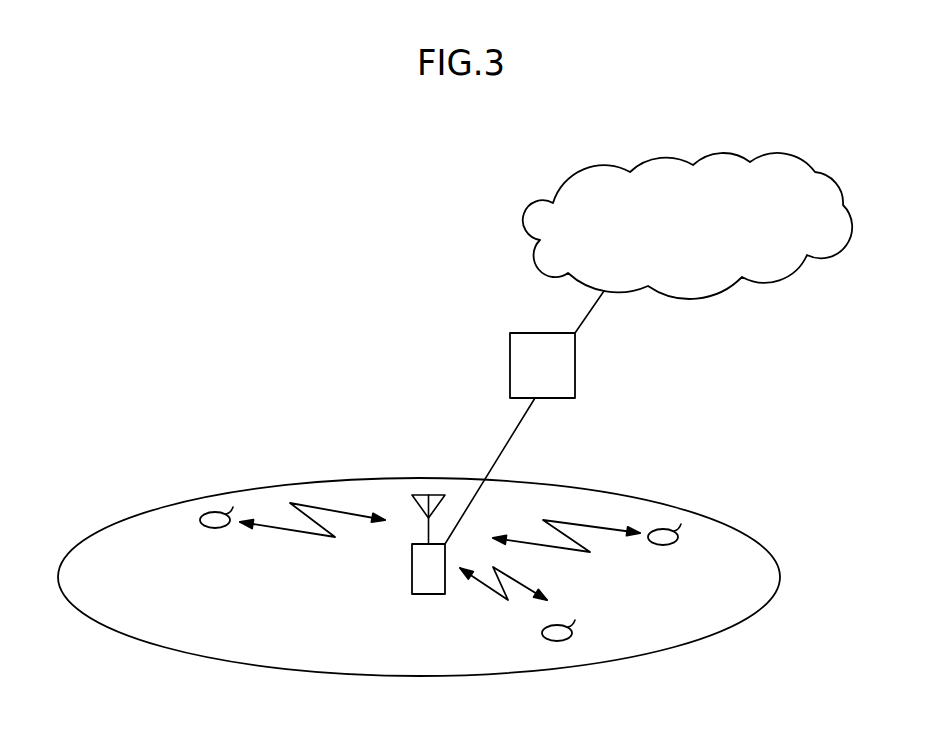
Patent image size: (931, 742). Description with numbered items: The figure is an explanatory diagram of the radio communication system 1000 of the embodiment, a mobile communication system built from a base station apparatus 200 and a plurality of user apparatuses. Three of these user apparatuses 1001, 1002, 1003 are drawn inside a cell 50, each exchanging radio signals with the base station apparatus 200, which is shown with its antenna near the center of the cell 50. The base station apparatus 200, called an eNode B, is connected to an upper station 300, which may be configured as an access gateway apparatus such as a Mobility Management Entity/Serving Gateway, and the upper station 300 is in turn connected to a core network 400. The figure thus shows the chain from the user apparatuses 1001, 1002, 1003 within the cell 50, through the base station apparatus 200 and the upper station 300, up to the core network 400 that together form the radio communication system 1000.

The radio communication system 1000 is at (217, 194).
The core network 400 is at (728, 155).
The upper station 300 is at (575, 362).
The base station apparatus 200 is at (412, 578).
The cell 50 is at (650, 652).
The user apparatus 1001 is at (215, 528).
The user apparatus 1002 is at (542, 632).
The user apparatus 1003 is at (667, 545).